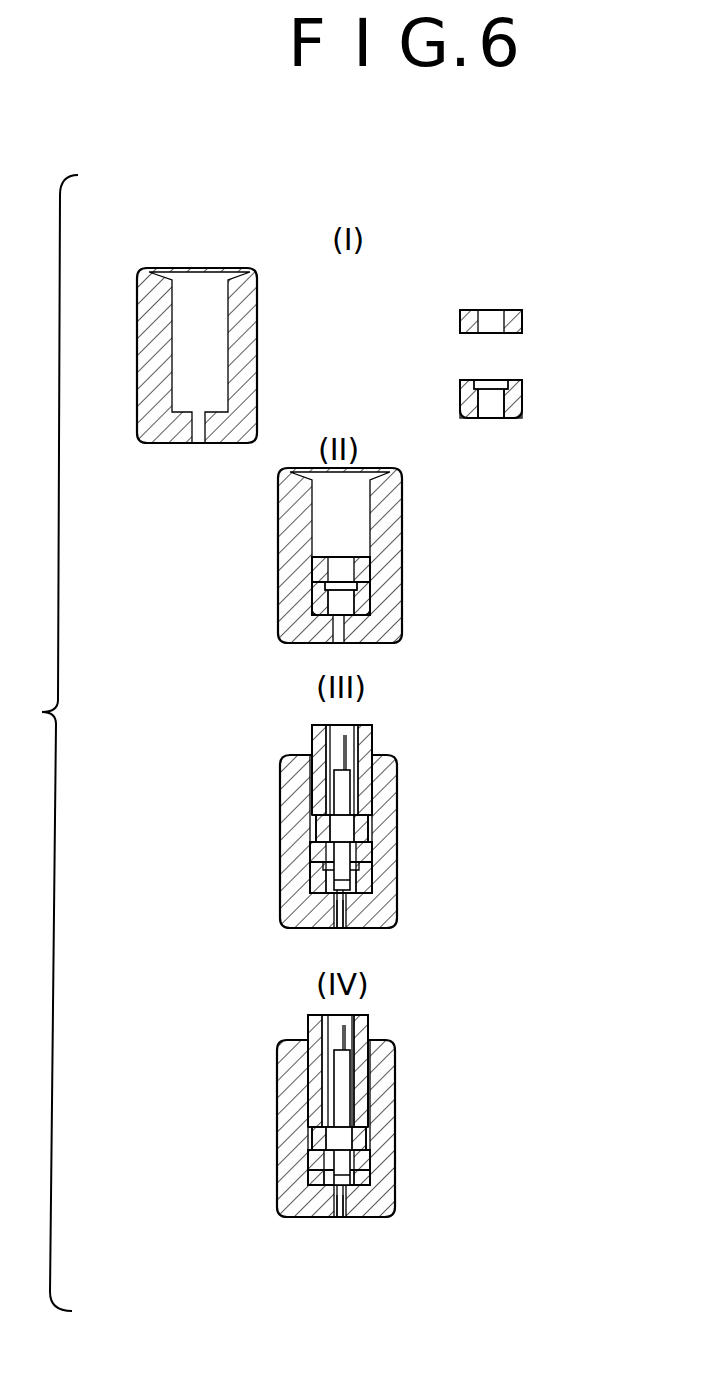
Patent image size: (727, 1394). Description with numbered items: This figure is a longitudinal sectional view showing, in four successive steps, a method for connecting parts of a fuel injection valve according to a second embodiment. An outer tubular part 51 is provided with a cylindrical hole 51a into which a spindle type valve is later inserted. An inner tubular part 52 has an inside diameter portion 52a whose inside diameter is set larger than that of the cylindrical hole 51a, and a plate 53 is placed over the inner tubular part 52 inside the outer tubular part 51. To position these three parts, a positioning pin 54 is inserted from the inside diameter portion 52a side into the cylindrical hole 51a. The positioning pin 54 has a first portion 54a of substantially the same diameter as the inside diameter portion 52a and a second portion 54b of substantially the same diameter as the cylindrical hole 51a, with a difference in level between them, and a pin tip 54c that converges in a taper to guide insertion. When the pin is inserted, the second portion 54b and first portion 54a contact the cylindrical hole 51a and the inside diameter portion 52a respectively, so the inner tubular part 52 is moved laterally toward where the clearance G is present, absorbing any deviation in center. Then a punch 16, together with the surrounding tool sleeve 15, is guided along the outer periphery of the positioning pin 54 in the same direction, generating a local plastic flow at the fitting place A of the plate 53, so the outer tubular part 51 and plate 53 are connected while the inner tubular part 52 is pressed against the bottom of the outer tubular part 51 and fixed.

The outer tubular part 51 is at (243, 318).
The cylindrical hole 51a is at (200, 430).
The inner tubular part 52 is at (518, 378).
The inside diameter portion 52a is at (494, 405).
The plate 53 is at (508, 310).
The positioning pin 54 is at (345, 778).
The first portion 54a is at (320, 842).
The second portion 54b is at (330, 900).
The pin tip 54c is at (336, 922).
The inner sleeve of tool 15 is at (322, 740).
The punch 16 is at (318, 790).
The clearance G is at (318, 604).
The fitting place A is at (318, 1136).